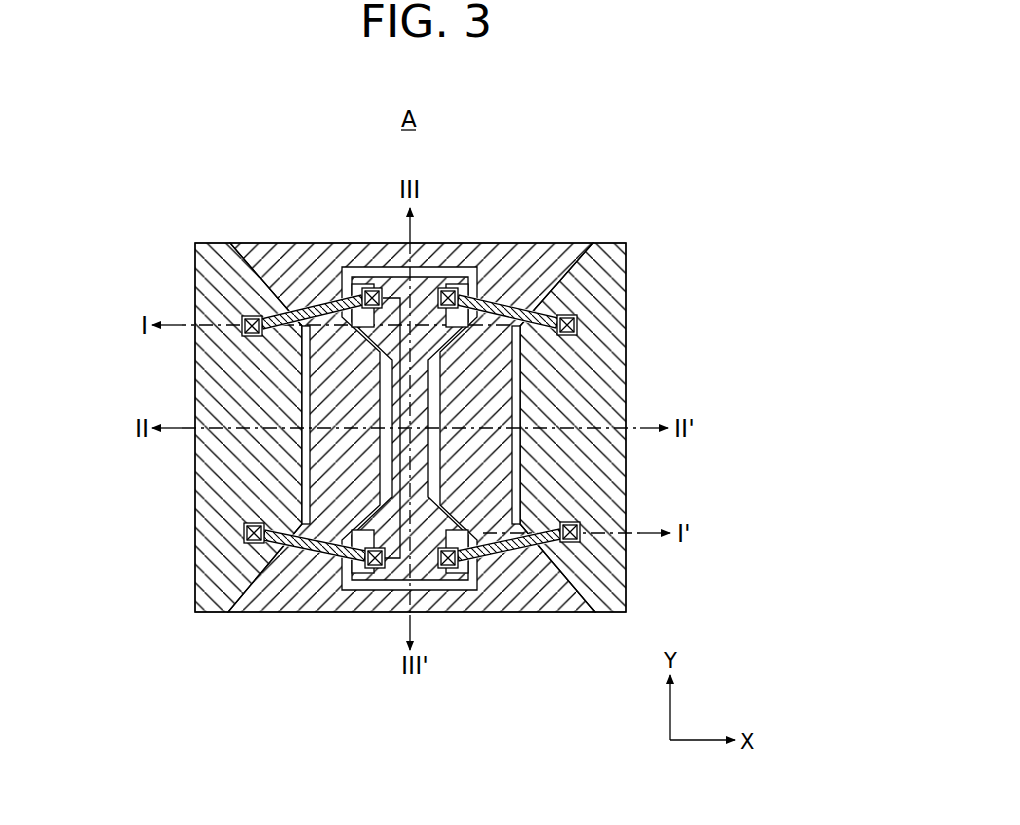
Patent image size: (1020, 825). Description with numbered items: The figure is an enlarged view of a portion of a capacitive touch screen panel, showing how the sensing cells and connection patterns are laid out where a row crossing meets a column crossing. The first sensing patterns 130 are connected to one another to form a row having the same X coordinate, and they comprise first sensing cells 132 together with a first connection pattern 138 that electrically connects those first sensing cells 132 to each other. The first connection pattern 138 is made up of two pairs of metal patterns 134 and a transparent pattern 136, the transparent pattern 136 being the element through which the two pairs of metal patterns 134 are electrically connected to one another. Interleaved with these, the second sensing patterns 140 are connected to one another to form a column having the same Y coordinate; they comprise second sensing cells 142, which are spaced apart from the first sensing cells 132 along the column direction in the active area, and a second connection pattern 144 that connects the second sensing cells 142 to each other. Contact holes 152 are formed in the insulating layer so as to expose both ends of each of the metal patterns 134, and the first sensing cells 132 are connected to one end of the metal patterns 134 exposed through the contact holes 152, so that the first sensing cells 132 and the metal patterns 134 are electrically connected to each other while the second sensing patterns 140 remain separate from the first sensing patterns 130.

The first sensing pattern 130 is at (326, 517).
The first sensing cell 132 is at (208, 603).
The metal pattern 134 is at (320, 548).
The transparent pattern 136 is at (409, 496).
The first connection pattern 138 is at (407, 512).
The second sensing pattern 140 is at (326, 427).
The second sensing cell 142 is at (270, 275).
The second connection pattern 144 is at (320, 385).
The contact hole 152 is at (578, 325).